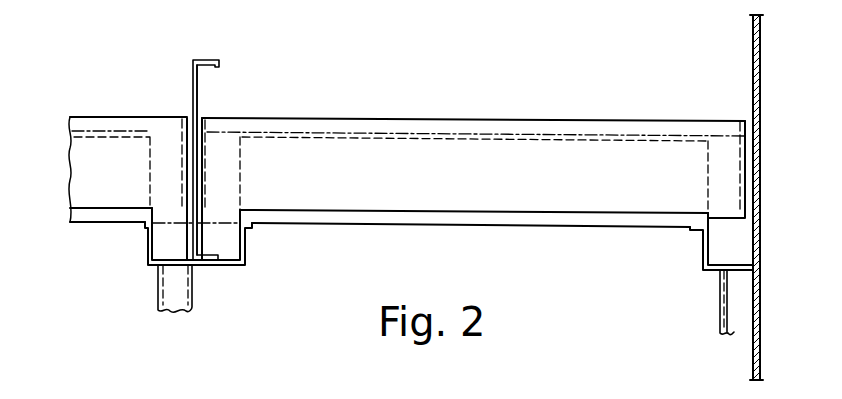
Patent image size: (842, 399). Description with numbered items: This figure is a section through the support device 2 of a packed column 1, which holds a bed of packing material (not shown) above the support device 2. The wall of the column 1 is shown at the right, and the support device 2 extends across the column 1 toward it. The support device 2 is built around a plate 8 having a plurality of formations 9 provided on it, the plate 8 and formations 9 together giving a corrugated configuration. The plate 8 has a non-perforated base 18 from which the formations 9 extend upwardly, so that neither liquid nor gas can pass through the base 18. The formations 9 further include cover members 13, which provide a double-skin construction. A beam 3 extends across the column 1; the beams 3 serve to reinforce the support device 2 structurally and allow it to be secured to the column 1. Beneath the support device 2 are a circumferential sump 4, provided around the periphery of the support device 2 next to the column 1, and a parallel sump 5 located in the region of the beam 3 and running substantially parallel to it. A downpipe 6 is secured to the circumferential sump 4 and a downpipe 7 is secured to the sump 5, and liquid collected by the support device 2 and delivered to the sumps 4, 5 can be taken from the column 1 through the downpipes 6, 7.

The packed column 1 is at (748, 56).
The support device 2 is at (407, 160).
The beam 3 is at (200, 85).
The circumferential sump 4 is at (700, 250).
The parallel sump 5 is at (247, 247).
The downpipe 6 is at (727, 302).
The downpipe 7 is at (193, 290).
The plate 8 is at (385, 213).
The formation 9 is at (97, 139).
The cover member 13 is at (143, 117).
The base 18 is at (489, 226).